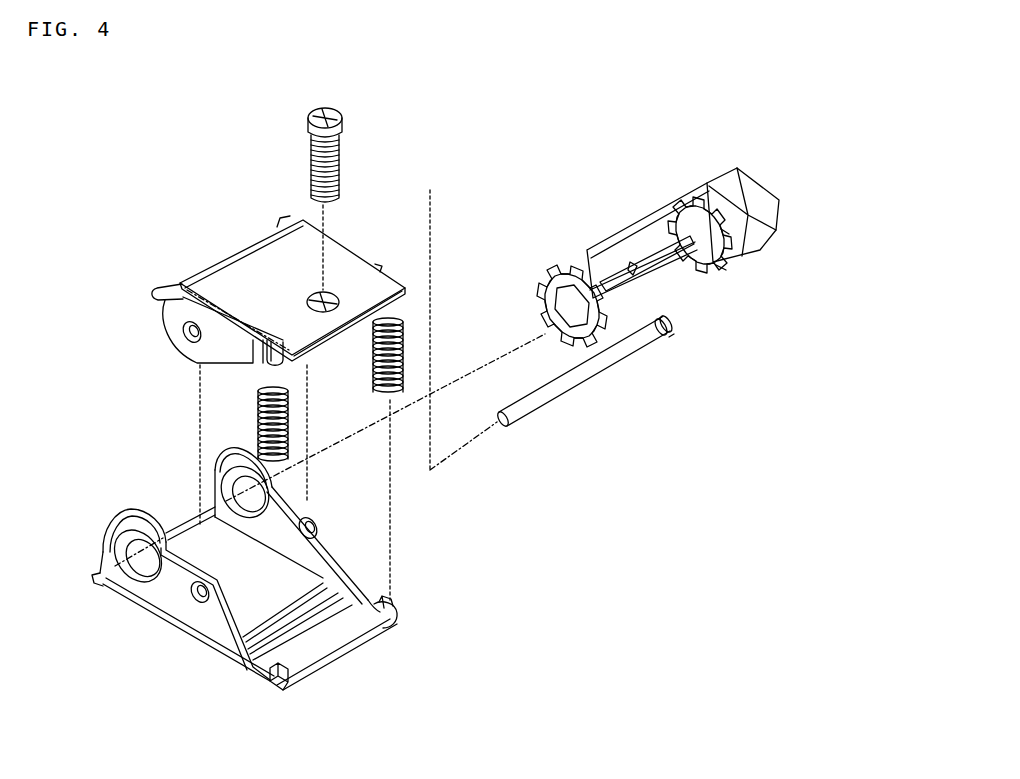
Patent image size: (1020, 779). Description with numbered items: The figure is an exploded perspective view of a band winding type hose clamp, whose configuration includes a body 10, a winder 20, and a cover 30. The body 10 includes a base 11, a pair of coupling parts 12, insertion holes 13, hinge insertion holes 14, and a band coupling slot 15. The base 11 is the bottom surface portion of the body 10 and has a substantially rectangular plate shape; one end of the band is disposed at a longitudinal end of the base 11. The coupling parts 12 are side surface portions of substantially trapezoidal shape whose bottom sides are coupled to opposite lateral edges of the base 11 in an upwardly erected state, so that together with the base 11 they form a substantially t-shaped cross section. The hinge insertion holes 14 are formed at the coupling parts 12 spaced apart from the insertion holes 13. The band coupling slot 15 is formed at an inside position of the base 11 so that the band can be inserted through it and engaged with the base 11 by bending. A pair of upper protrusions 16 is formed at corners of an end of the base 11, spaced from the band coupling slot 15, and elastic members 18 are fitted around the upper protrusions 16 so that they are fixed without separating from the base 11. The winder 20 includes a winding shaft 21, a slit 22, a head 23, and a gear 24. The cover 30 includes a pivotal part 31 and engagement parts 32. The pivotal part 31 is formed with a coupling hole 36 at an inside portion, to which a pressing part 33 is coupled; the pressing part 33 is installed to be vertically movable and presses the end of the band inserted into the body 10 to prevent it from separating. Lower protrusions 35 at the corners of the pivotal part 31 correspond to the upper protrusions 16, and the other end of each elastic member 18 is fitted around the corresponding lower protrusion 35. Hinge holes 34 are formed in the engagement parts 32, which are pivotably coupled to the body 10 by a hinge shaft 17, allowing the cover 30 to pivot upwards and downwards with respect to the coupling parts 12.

The body 10 is at (176, 599).
The base 11 is at (318, 648).
The coupling part 12 is at (122, 520).
The insertion hole 13 is at (250, 490).
The hinge insertion hole 14 is at (320, 527).
The band coupling slot 15 is at (338, 625).
The upper protrusion 16 is at (397, 607).
The hinge shaft 17 is at (573, 377).
The elastic member 18 is at (405, 345).
The winder 20 is at (620, 223).
The winding shaft 21 is at (683, 273).
The slit 22 is at (640, 282).
The head 23 is at (775, 222).
The gear 24 is at (738, 267).
The cover 30 is at (201, 222).
The pivotal part 31 is at (262, 283).
The engagement part 32 is at (160, 303).
The pressing part 33 is at (343, 152).
The hinge hole 34 is at (185, 338).
The lower protrusion 35 is at (275, 362).
The coupling hole 36 is at (333, 291).